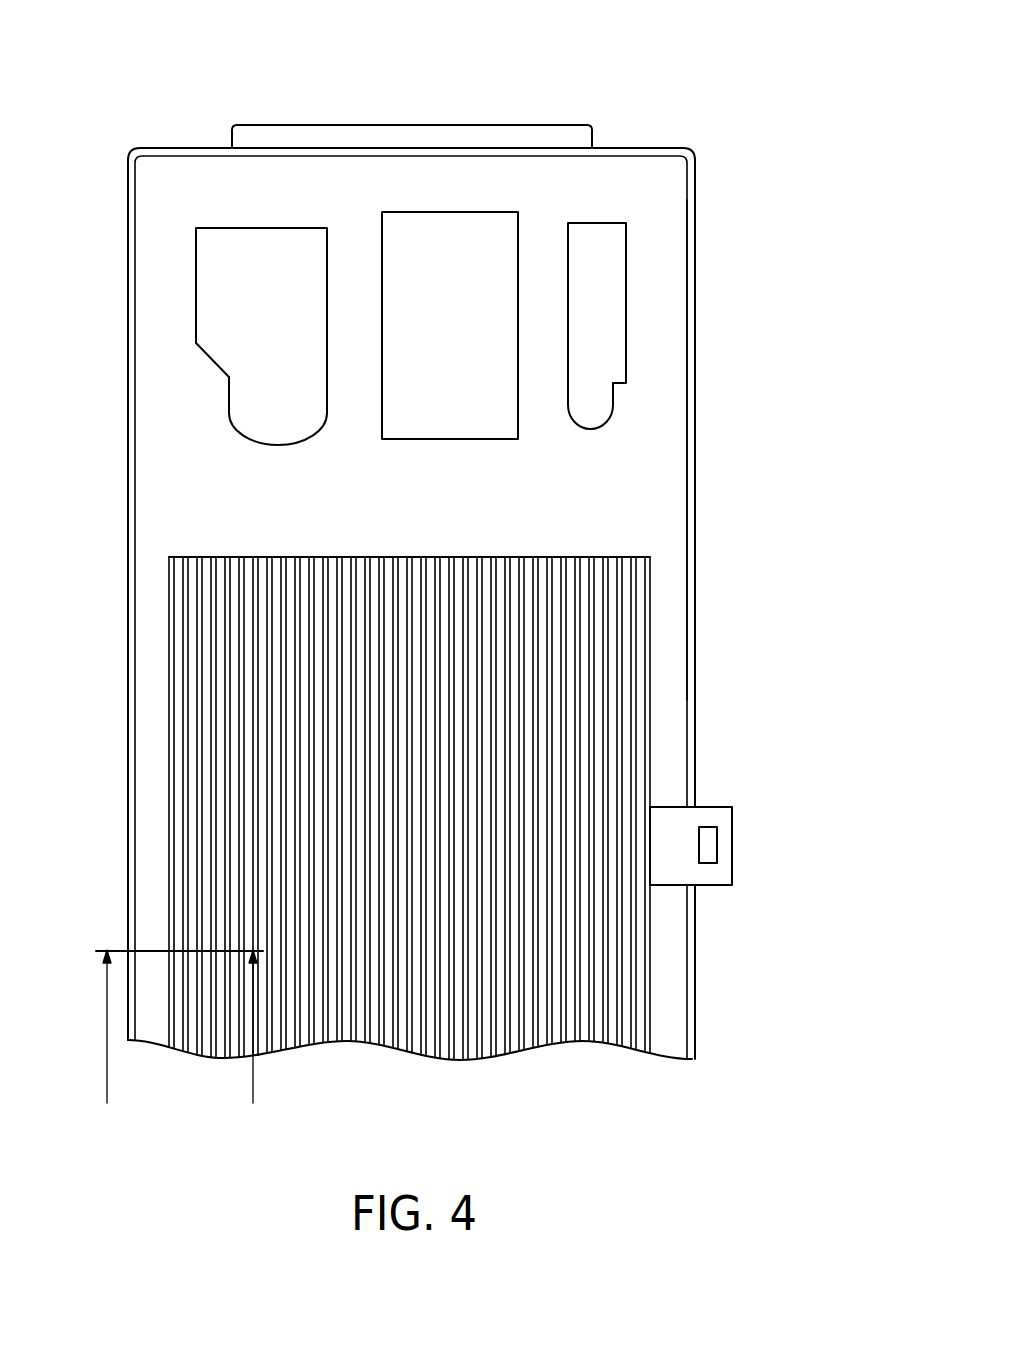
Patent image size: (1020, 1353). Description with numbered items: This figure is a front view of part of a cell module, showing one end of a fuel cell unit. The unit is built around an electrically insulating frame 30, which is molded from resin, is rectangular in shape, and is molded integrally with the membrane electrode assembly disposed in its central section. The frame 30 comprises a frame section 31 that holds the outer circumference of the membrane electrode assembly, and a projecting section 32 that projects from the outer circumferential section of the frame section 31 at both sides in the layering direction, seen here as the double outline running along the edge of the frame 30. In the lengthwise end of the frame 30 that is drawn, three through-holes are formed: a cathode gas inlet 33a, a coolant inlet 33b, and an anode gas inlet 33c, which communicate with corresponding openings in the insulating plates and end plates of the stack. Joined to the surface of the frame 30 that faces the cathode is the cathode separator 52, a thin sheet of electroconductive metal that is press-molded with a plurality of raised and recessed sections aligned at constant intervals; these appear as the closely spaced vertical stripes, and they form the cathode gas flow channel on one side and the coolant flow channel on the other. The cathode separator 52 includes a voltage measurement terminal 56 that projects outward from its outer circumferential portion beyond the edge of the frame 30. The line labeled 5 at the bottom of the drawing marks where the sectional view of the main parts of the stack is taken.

The frame 30 is at (699, 195).
The frame section 31 is at (672, 490).
The projecting section 32 is at (694, 298).
The cathode gas inlet 33a is at (598, 232).
The coolant inlet 33b is at (446, 222).
The anode gas inlet 33c is at (260, 238).
The cathode separator 52 is at (642, 713).
The voltage measurement terminal 56 is at (722, 830).
The section line 5- 5 is at (179, 1045).